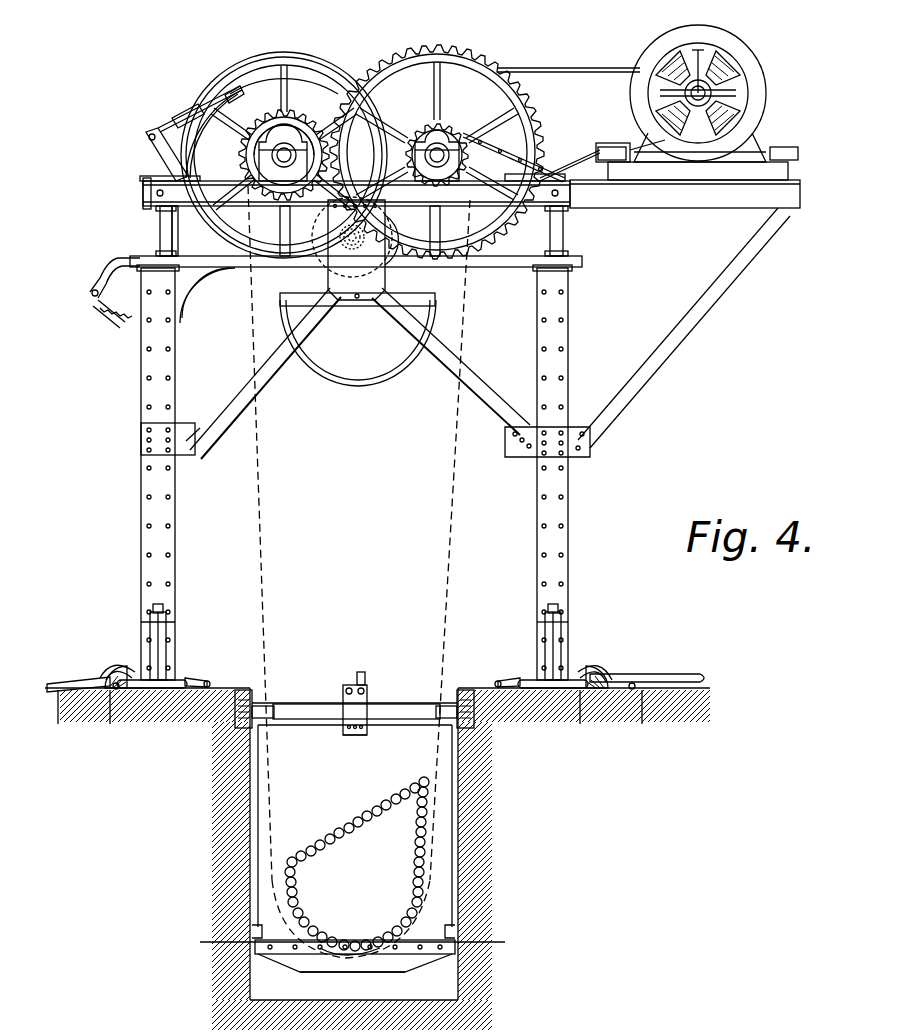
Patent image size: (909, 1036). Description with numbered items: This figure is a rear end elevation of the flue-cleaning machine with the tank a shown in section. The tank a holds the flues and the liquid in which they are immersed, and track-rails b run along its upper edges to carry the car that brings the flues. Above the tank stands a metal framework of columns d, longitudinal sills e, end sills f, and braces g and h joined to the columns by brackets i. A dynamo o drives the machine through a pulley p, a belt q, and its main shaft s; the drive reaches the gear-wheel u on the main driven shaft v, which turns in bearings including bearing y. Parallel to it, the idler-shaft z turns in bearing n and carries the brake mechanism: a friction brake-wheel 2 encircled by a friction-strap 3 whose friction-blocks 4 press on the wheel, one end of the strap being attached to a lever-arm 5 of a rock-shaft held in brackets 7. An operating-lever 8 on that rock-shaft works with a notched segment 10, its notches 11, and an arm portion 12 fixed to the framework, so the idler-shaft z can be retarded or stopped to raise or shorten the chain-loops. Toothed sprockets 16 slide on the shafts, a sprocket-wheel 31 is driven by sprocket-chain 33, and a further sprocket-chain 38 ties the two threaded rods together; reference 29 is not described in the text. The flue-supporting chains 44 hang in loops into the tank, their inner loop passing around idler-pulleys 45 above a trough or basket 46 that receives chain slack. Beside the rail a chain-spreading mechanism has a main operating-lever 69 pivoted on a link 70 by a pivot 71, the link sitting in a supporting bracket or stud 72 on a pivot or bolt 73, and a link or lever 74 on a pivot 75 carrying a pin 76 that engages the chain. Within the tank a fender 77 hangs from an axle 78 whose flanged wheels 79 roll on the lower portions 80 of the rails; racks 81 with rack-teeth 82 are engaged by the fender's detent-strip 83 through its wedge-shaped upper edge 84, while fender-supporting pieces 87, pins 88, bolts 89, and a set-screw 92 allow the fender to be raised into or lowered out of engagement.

The friction brake-wheel 2 is at (308, 76).
The friction-strap 3 is at (292, 52).
The friction-blocks 4 is at (268, 62).
The lever-arm 5 is at (148, 152).
The bearings or brackets 7 is at (266, 130).
The operating-lever 8 is at (176, 238).
The notched segment 10 is at (112, 305).
The notches 11 is at (110, 310).
The arm portion 12 is at (108, 270).
The toothed sprockets 16 is at (318, 128).
The brake rod 29 is at (172, 114).
The sprocket-wheel 31 is at (575, 194).
The sprocket-chain 33 is at (518, 158).
The sprocket-chain 38 is at (356, 193).
The flue-supporting chains 44 is at (258, 460).
The idler-pulleys 45 is at (320, 240).
The trough or basket 46 is at (368, 380).
The main operating-lever 69 is at (60, 682).
The link 70 is at (346, 718).
The pivot 71 is at (126, 668).
The supporting bracket or stud 72 is at (356, 716).
The pivot or bolt 73 is at (80, 684).
The link or lever 74 is at (180, 678).
The pivot 75 is at (106, 672).
The pin 76 is at (208, 680).
The fenders 77 is at (355, 838).
The axle 78 is at (300, 706).
The flanged wheels 79 is at (262, 706).
The lower portions of the track-rails 80 is at (232, 740).
The racks 81 is at (258, 925).
The rack-teeth 82 is at (349, 945).
The detent-strip 83 is at (345, 942).
The wedge-shaped upper edge 84 is at (262, 956).
The fender-supporting pieces 87 is at (366, 700).
The pins 88 is at (355, 736).
The bolts 89 is at (348, 688).
The set-screw 92 is at (364, 676).
The tank a is at (352, 984).
The track-rails b is at (474, 668).
The columns d is at (141, 490).
The longitudinal sills e is at (158, 230).
The end sills f is at (640, 208).
The brace g is at (648, 382).
The brace h is at (222, 388).
The brackets i is at (522, 458).
The bearing n is at (276, 172).
The dynamo o is at (738, 62).
The pulley p is at (240, 92).
The belt q is at (577, 160).
The main shaft s is at (694, 102).
The gear-wheel u is at (437, 140).
The main driven shaft v is at (437, 172).
The bearing y is at (446, 182).
The idler-shaft z is at (288, 164).